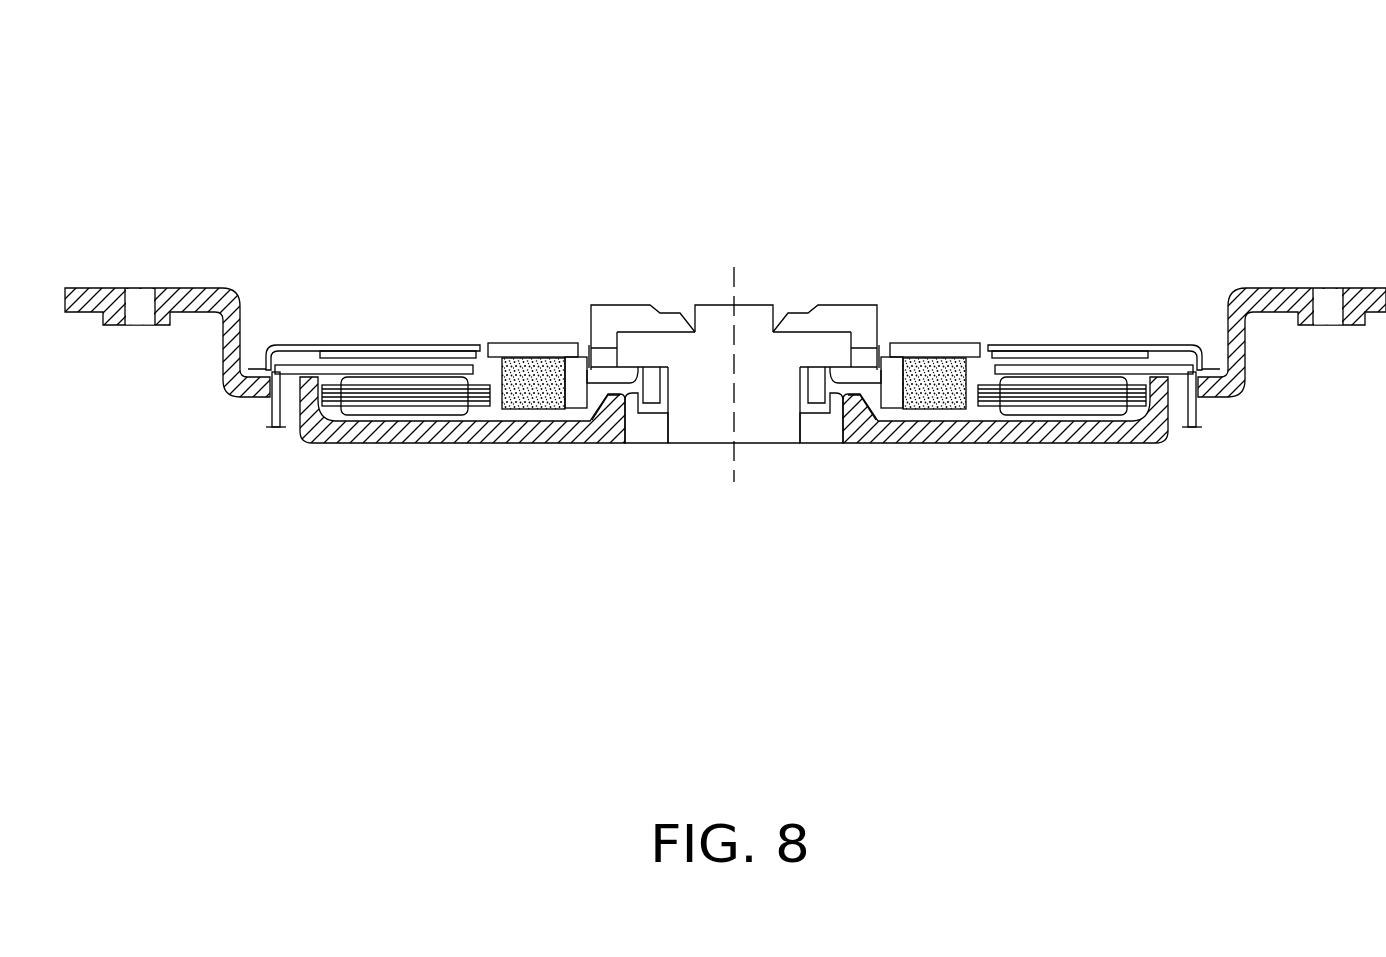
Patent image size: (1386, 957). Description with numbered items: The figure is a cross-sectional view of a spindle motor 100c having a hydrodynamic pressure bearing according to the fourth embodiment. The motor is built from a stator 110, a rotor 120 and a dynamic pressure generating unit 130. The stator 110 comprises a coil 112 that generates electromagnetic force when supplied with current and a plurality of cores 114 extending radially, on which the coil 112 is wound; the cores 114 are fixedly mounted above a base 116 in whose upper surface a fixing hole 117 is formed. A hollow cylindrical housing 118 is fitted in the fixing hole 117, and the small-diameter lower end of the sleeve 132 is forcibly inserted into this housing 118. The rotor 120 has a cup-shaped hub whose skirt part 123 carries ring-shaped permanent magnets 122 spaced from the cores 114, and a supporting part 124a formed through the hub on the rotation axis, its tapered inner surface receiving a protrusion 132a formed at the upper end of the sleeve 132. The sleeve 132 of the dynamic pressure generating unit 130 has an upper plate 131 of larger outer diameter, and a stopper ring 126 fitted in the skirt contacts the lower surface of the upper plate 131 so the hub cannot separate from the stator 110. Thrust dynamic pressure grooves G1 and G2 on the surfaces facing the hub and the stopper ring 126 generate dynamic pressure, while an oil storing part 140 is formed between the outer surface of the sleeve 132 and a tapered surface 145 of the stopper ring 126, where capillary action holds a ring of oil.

The spindle motor 100c is at (1150, 200).
The stator 110 is at (472, 545).
The coil 112 is at (365, 412).
The core 114 is at (420, 402).
The base 116 is at (557, 432).
The fixing hole 117 is at (622, 436).
The hollow cylindrical housing 118 is at (648, 432).
The rotor 120 is at (992, 240).
The magnet 122 is at (945, 385).
The skirt part 123 is at (888, 378).
The supporting part 124a is at (852, 320).
The stopper ring 126 is at (862, 378).
The dynamic pressure generating unit 130 is at (575, 224).
The upper plate 131 is at (605, 345).
The sleeve 132 is at (702, 407).
The protrusion 132a is at (728, 300).
The oil storing part 140 is at (800, 394).
The tapered surface 145 is at (808, 394).
The thrust dynamic pressure groove G1 is at (640, 348).
The thrust dynamic pressure groove G2 is at (560, 341).